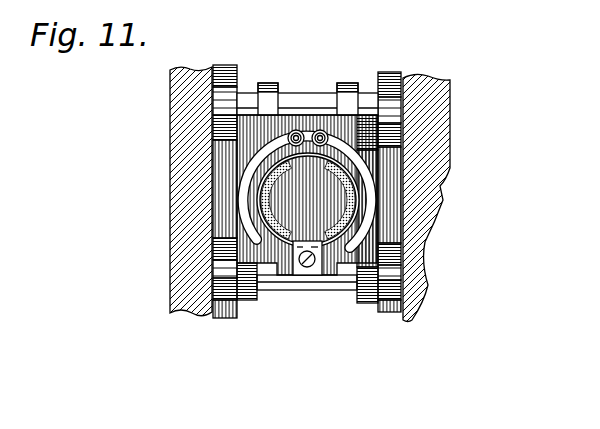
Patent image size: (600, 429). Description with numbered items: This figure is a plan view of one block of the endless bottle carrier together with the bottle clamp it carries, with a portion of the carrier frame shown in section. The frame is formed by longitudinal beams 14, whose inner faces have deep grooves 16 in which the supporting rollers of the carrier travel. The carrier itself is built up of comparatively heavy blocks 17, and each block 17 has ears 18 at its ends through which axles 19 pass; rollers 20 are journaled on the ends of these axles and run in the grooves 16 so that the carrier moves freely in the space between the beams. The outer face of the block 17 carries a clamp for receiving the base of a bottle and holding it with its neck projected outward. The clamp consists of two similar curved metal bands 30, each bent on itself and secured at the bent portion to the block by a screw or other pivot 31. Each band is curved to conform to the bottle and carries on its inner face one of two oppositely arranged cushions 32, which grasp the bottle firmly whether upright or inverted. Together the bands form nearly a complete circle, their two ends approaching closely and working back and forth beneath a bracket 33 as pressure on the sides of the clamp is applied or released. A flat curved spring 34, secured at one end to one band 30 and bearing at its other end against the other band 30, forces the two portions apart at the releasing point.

The longitudinal beam 14 is at (184, 145).
The groove 16 is at (221, 185).
The block 17 is at (275, 281).
The ear 18 is at (268, 83).
The axle 19 is at (288, 102).
The roller 20 is at (223, 66).
The curved metal band 30 is at (256, 153).
The screw or pivot 31 is at (299, 130).
The cushion 32 is at (344, 211).
The bracket 33 is at (298, 281).
The flat curved spring 34 is at (332, 136).